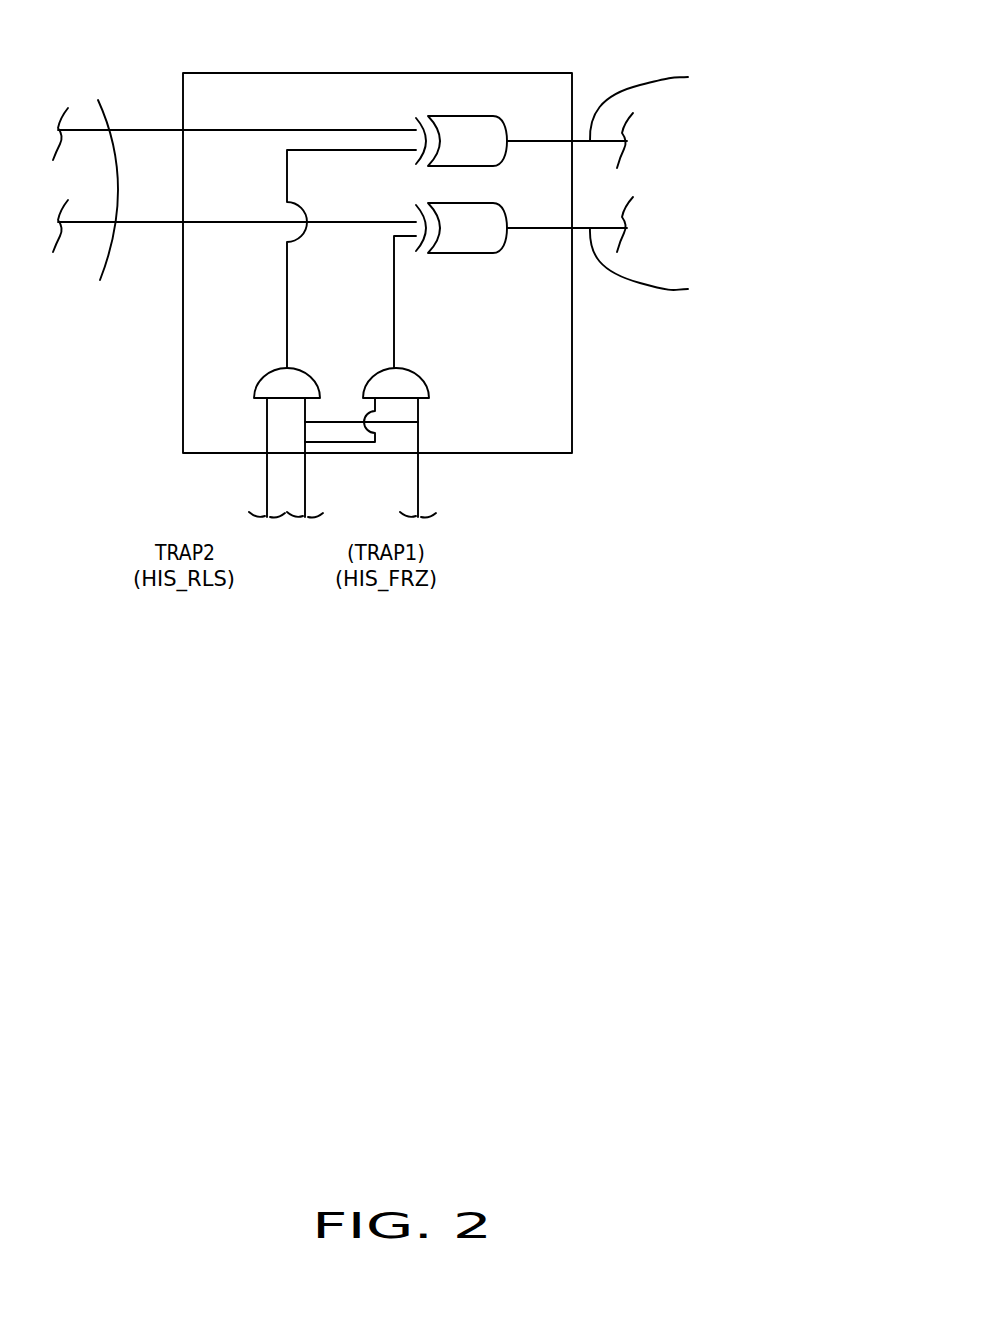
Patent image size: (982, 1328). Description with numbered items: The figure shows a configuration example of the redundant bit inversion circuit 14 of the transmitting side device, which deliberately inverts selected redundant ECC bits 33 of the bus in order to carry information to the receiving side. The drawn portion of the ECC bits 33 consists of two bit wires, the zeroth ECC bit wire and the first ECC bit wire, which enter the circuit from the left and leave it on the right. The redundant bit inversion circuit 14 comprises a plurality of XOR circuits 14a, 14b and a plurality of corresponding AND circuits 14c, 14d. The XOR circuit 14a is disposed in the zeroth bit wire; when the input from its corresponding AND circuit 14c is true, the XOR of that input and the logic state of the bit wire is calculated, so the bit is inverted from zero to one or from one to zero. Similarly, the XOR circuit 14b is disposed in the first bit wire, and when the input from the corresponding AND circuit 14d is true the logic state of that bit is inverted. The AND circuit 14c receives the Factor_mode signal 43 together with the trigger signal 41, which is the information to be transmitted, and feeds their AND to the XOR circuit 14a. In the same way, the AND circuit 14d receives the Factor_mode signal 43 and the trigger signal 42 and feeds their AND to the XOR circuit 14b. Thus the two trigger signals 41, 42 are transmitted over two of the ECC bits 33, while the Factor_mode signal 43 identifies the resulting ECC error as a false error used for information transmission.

The redundant bit inversion circuit 14 is at (512, 73).
The XOR circuit 14a is at (477, 253).
The XOR circuit 14b is at (452, 116).
The AND circuit 14c is at (378, 370).
The AND circuit 14d is at (268, 370).
The ECC bits 33 is at (114, 252).
The trigger signal 41 is at (307, 478).
The trigger signal 42 is at (267, 478).
The Factor_mode signal 43 is at (418, 478).